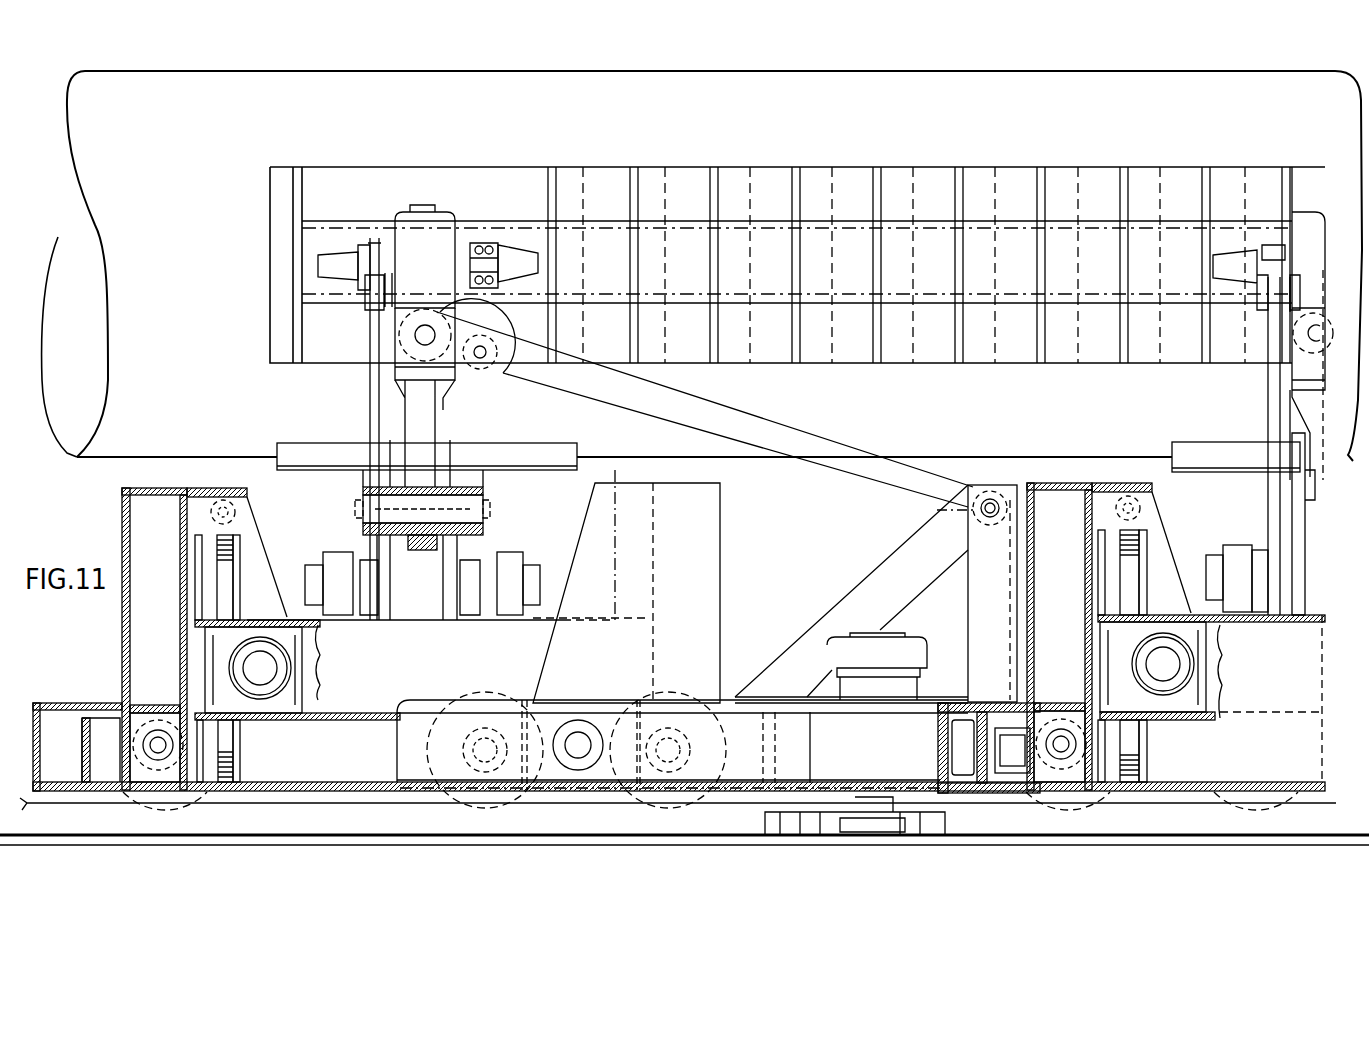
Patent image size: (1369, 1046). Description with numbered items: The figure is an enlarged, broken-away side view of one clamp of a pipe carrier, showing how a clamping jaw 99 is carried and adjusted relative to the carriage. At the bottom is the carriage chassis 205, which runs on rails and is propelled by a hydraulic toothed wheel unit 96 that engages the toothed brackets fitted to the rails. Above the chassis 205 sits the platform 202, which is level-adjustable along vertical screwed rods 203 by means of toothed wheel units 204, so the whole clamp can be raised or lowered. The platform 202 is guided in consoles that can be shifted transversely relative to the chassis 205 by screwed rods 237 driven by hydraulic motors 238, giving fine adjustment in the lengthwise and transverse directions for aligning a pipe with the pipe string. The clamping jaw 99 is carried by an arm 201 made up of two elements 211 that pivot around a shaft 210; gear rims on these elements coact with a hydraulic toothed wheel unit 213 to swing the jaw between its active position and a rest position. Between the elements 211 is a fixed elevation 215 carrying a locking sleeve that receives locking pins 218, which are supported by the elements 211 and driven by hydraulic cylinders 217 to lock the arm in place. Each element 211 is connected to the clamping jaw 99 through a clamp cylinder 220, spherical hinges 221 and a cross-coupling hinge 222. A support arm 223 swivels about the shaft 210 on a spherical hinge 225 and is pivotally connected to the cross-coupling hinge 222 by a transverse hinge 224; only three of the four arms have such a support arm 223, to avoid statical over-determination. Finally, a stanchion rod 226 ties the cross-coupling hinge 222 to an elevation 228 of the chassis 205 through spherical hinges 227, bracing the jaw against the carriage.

The clamping jaw 99 is at (318, 169).
The hydraulic toothed wheel unit 96 is at (852, 650).
The arm 201 is at (320, 518).
The platform 202 is at (384, 700).
The vertical screwed rod 203 is at (225, 585).
The toothed wheel unit 204 is at (260, 672).
The carriage chassis 205 is at (748, 730).
The shaft 210 is at (365, 508).
The element 211 is at (175, 488).
The hydraulic toothed wheel unit 213 is at (337, 592).
The fixed elevation 215 is at (446, 592).
The hydraulic cylinder 217 is at (285, 452).
The locking pin 218 is at (1270, 457).
The clamp cylinder 220 is at (398, 240).
The spherical hinge 221 is at (481, 243).
The cross-coupling hinge 222 is at (430, 245).
The support arm 223 is at (420, 410).
The transverse hinge 224 is at (418, 340).
The spherical hinge 225 is at (480, 510).
The stanchion rod 226 is at (770, 433).
The spherical hinge 227 is at (484, 360).
The elevation 228 is at (990, 590).
The screwed rod 237 is at (158, 762).
The hydraulic motor 238 is at (158, 718).